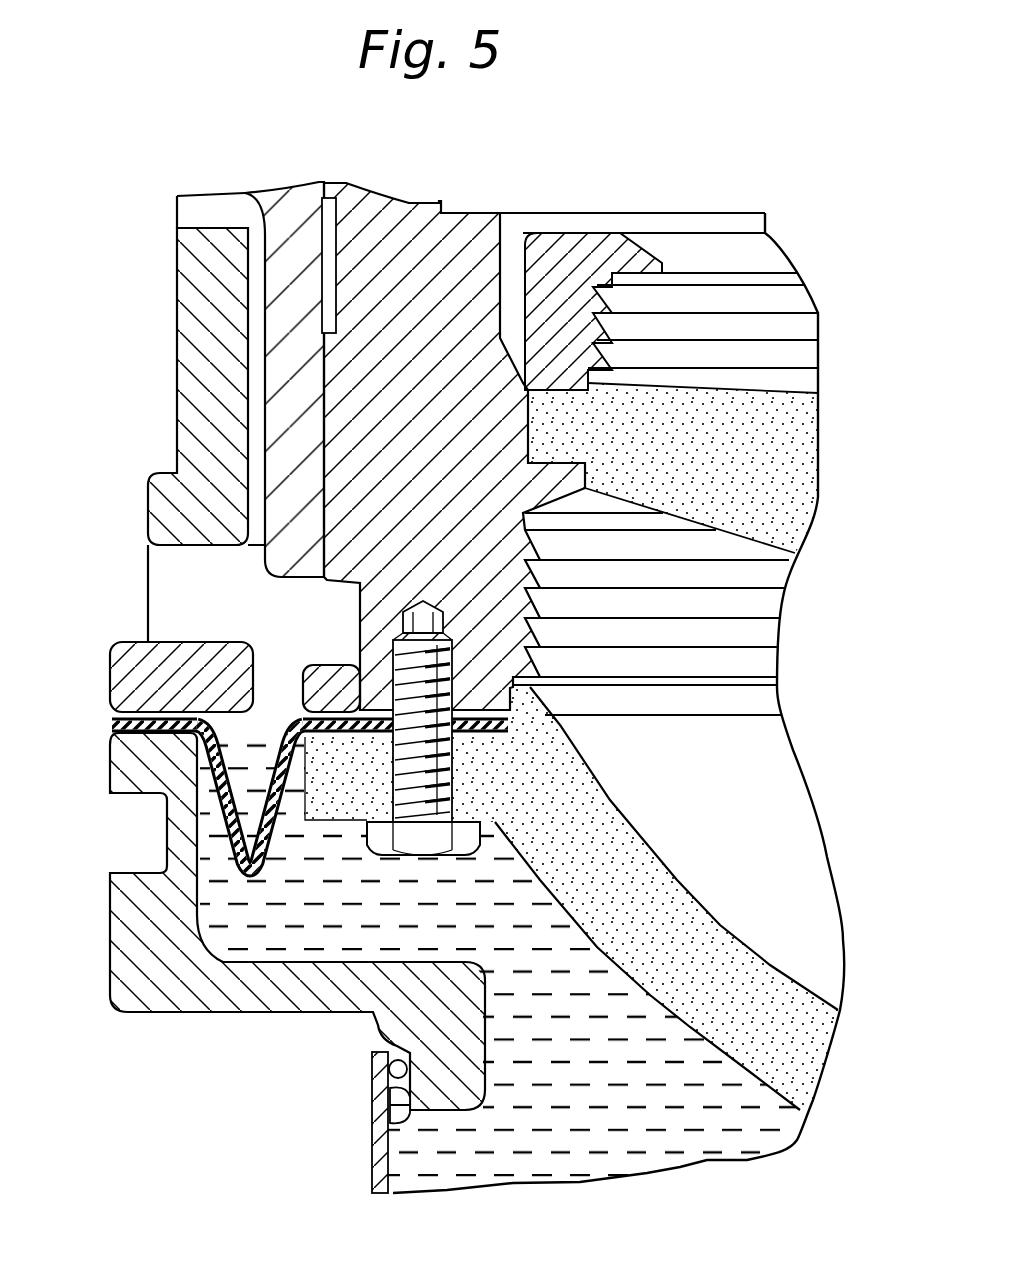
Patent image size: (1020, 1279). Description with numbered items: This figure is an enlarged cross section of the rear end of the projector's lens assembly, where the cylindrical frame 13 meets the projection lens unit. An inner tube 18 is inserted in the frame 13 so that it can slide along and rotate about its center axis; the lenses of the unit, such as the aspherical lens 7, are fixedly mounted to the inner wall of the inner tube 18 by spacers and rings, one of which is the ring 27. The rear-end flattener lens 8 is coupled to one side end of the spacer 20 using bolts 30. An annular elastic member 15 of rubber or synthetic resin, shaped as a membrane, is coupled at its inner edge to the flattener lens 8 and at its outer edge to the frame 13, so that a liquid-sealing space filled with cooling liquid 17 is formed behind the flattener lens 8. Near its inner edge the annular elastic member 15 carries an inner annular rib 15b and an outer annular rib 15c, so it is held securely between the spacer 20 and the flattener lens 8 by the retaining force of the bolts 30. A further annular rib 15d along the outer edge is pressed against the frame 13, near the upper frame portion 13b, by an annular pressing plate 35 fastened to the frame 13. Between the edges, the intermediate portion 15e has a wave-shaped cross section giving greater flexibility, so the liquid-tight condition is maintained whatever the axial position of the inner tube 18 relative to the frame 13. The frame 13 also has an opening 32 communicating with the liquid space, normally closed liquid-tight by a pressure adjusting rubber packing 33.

The aspherical lens 7 is at (792, 457).
The flattener lens 8 is at (675, 890).
The frame 13 is at (190, 407).
The housing lip portion 13b is at (193, 227).
The annular elastic member 15 is at (347, 784).
The annular rib 15b is at (515, 722).
The annular rib 15c is at (353, 733).
The annular rib 15d is at (152, 725).
The intermediate portion 15e is at (229, 770).
The cooling liquid 17 is at (700, 1047).
The inner tube 18 is at (297, 212).
The spacer 20 is at (417, 222).
The ring 27 is at (585, 247).
The bolt 30 is at (410, 668).
The opening 32 is at (372, 1128).
The pressure adjusting rubber packing 33 is at (377, 1160).
The annular pressing plate 35 is at (120, 672).